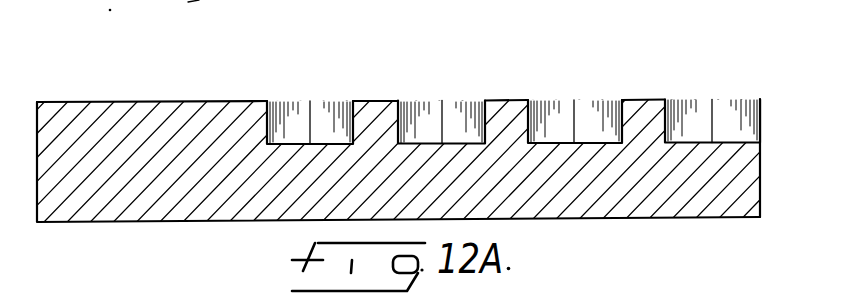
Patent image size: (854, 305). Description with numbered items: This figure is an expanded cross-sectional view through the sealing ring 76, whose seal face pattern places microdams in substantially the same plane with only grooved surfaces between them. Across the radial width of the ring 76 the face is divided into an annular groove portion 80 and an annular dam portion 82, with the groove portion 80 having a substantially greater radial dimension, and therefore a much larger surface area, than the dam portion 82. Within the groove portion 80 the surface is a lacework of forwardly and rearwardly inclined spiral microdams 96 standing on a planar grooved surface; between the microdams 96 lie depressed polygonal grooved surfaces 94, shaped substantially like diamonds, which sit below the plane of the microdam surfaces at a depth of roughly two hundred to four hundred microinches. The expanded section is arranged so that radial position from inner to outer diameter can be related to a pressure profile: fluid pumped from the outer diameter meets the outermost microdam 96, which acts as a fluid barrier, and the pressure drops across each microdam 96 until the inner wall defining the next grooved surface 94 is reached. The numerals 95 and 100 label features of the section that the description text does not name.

The sealing ring 76 is at (841, 133).
The groove portion 80 is at (761, 98).
The dam portion 82 is at (167, 51).
The four-sided polygonal grooved surfaces 94 is at (428, 102).
The end compartment 95 is at (738, 113).
The spiral microdams 96 is at (515, 98).
The side edge 100 is at (762, 113).